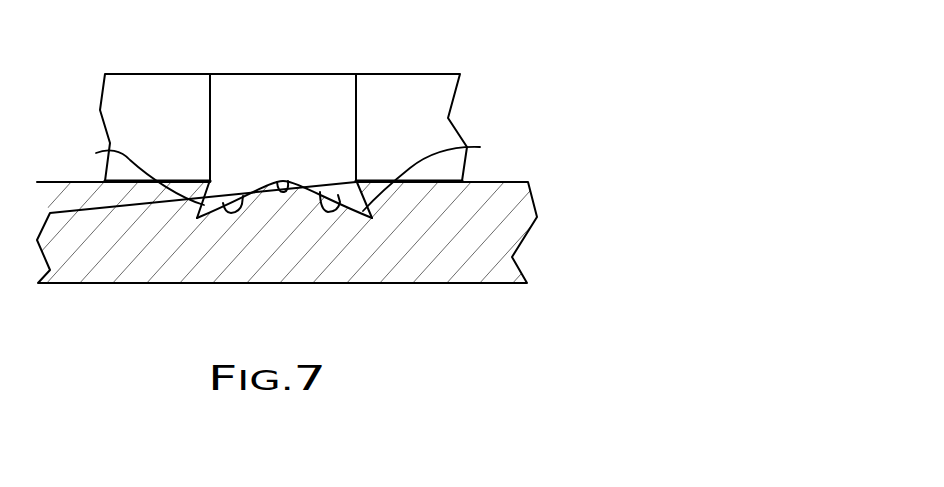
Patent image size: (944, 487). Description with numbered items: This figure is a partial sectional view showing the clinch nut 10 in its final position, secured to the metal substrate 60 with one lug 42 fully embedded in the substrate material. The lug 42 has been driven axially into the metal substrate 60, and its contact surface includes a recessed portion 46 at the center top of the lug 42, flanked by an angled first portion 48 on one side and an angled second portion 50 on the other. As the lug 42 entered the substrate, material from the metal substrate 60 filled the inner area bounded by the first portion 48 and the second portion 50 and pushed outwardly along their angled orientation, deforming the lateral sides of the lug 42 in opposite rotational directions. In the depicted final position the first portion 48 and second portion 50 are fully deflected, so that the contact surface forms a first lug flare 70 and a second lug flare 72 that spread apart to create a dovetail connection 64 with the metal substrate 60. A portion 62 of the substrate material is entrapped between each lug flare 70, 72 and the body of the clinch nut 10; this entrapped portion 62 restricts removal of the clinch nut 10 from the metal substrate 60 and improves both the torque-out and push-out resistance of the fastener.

The clinch nut 10 is at (486, 86).
The lug 42 is at (360, 92).
The recessed portion 46 is at (289, 178).
The first portion 48 is at (322, 193).
The second portion 50 is at (241, 197).
The metal substrate 60 is at (515, 204).
The portion 62 is at (198, 188).
The dovetail connection 64 is at (182, 220).
The first lug flare 70 is at (96, 153).
The second lug flare 72 is at (480, 147).